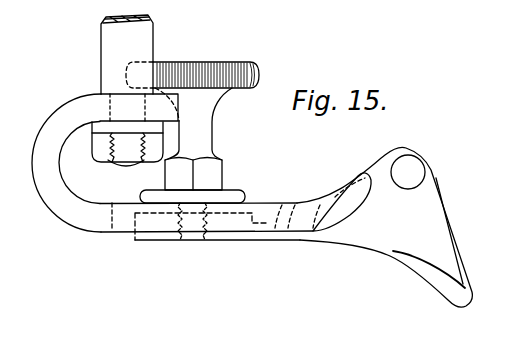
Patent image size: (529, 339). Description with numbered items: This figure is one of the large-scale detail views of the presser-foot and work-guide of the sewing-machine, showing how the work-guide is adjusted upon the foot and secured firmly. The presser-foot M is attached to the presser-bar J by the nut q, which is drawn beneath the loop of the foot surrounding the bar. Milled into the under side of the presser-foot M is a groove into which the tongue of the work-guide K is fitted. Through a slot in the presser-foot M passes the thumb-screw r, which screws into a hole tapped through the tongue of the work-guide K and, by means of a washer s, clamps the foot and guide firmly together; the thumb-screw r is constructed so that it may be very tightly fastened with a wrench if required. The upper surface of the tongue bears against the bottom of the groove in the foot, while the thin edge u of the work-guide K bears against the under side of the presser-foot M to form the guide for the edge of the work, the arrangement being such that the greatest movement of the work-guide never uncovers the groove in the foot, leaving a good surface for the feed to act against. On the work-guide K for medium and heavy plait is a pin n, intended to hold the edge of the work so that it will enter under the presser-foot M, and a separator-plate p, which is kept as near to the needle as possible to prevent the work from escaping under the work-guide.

The presser-bar J is at (127, 54).
The nut q is at (127, 130).
The thumb-screw r is at (192, 151).
The washer s is at (192, 183).
The presser-foot M is at (172, 163).
The thin edge of the work-guide u is at (227, 227).
The work-guide K is at (384, 227).
The pin n is at (408, 172).
The separator-plate p is at (429, 270).